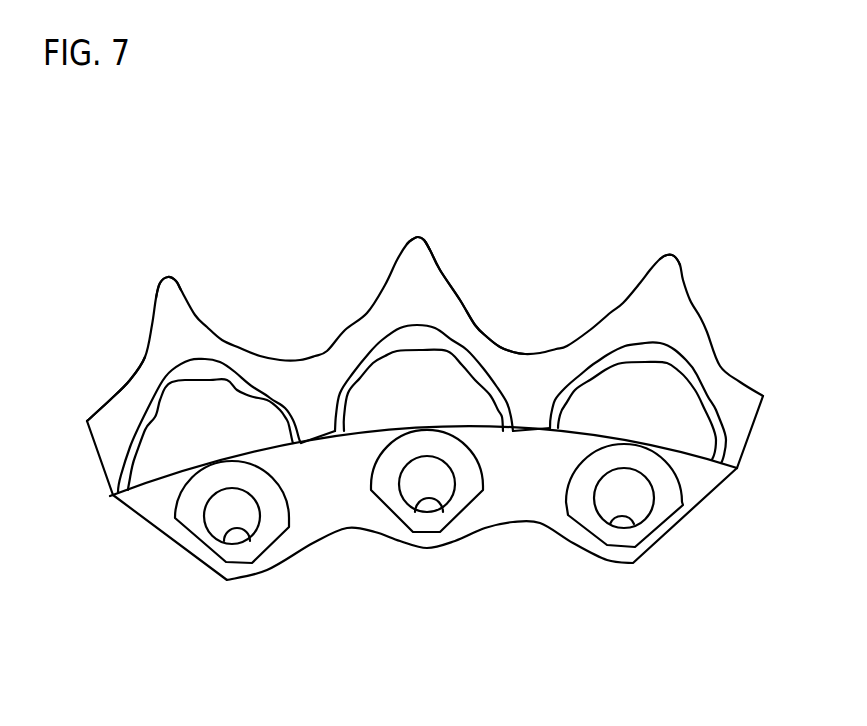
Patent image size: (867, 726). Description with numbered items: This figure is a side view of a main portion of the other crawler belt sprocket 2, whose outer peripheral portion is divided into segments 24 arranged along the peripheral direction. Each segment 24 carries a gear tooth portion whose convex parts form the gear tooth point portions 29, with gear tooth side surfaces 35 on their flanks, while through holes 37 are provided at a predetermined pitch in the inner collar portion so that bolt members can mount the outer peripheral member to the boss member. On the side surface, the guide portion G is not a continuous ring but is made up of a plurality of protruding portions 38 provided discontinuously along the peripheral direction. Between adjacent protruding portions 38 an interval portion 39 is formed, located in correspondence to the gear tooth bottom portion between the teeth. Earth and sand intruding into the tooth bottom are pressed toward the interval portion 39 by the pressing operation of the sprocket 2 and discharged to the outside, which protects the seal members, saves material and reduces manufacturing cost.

The sprocket 2 is at (623, 227).
The segment 24 is at (444, 256).
The gear tooth point portion 29 is at (169, 293).
The gear tooth side surface 35 is at (152, 364).
The through hole 37 is at (252, 540).
The protruding portion 38 is at (230, 393).
The interval portion 39 is at (315, 415).
The guide portion G is at (667, 381).